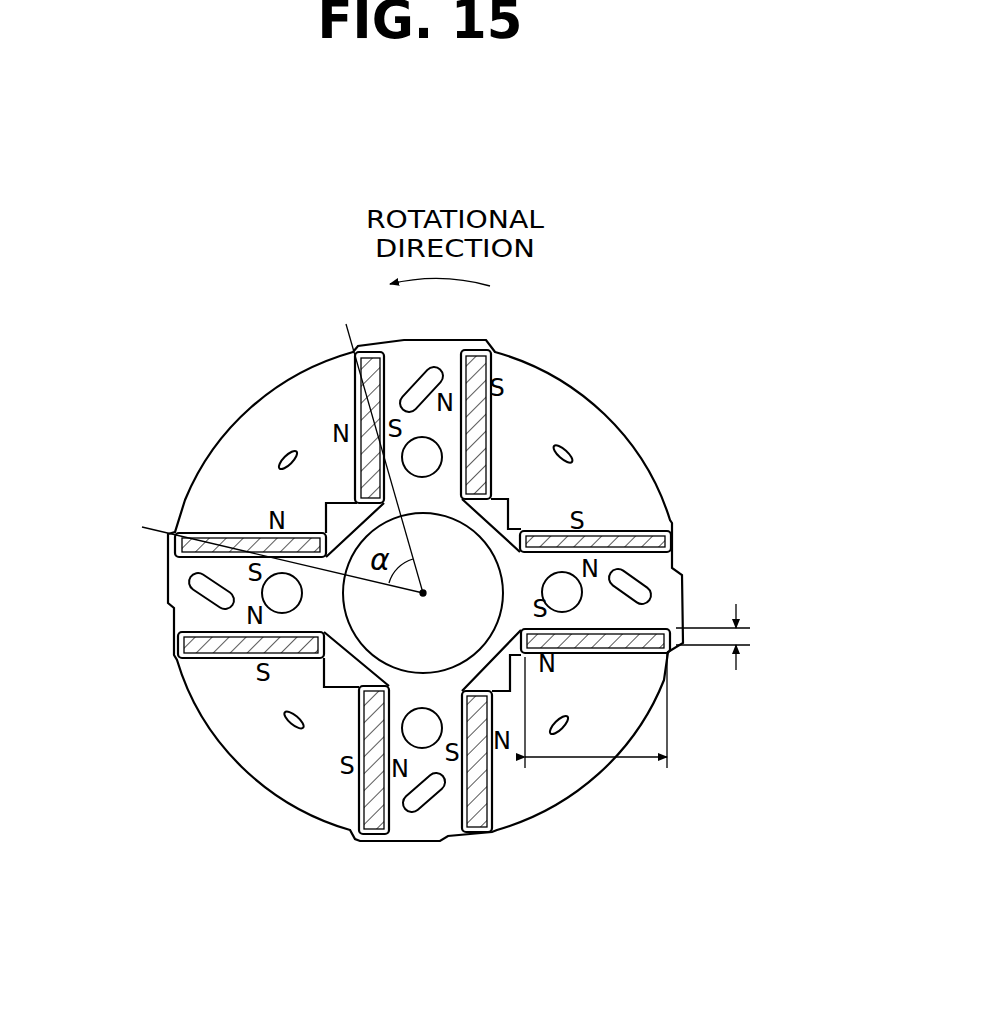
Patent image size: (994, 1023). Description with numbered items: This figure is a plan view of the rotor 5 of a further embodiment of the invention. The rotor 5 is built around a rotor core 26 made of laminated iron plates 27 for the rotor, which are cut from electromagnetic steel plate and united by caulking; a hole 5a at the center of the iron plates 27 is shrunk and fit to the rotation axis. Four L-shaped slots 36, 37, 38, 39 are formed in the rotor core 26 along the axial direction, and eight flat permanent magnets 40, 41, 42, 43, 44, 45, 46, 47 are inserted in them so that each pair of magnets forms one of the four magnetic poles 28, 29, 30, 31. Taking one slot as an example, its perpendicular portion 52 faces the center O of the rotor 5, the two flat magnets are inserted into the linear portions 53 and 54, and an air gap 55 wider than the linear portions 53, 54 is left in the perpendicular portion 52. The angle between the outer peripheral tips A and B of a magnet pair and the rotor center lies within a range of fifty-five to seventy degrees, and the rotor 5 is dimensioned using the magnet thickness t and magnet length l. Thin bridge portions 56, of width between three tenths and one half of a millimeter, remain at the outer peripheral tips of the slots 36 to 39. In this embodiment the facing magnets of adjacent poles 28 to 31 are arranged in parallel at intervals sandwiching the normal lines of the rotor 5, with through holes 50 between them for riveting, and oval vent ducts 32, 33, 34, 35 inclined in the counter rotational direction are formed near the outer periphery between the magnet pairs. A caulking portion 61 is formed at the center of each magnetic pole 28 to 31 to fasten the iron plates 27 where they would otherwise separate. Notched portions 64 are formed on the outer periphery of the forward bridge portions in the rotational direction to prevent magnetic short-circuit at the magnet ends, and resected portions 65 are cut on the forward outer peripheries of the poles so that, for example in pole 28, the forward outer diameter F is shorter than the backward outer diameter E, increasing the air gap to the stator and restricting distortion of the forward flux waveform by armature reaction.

The rotor 5 is at (560, 345).
The hole 5a is at (423, 670).
The perpendicular portion 52 is at (442, 585).
The rotor core 26 is at (525, 368).
The iron plates for the rotor 27 is at (600, 450).
The magnetic pole 28 is at (499, 471).
The magnetic pole 29 is at (262, 437).
The magnetic pole 30 is at (224, 731).
The magnetic pole 31 is at (572, 709).
The oval vent duct 32 is at (427, 366).
The oval vent duct 33 is at (195, 583).
The oval vent duct 34 is at (420, 810).
The oval vent duct 35 is at (645, 595).
The L-shaped slot 36 is at (327, 353).
The L-shaped slot 37 is at (215, 658).
The L-shaped slot 38 is at (490, 803).
The L-shaped slot 39 is at (600, 525).
The flat permanent magnet 40 is at (350, 397).
The flat permanent magnet 41 is at (240, 533).
The flat permanent magnet 42 is at (247, 652).
The flat permanent magnet 43 is at (385, 838).
The flat permanent magnet 44 is at (490, 773).
The flat permanent magnet 45 is at (607, 640).
The flat permanent magnet 46 is at (590, 524).
The flat permanent magnet 47 is at (423, 593).
The through hole 50 is at (263, 590).
The linear portion 53 is at (353, 413).
The linear portion 54 is at (258, 527).
The air gap 55 is at (330, 517).
The bridge portion 56 is at (360, 350).
The caulking portion 61 is at (280, 460).
The notched portion 64 is at (372, 352).
The resected portion 65 is at (668, 653).
The tip of the outer periphery of magnet A is at (372, 439).
The tip of the outer periphery of magnet B is at (276, 540).
The backward outer diameter E is at (660, 521).
The forward outer diameter F is at (510, 410).
The thickness of magnet t is at (722, 637).
The length of magnet l is at (596, 710).